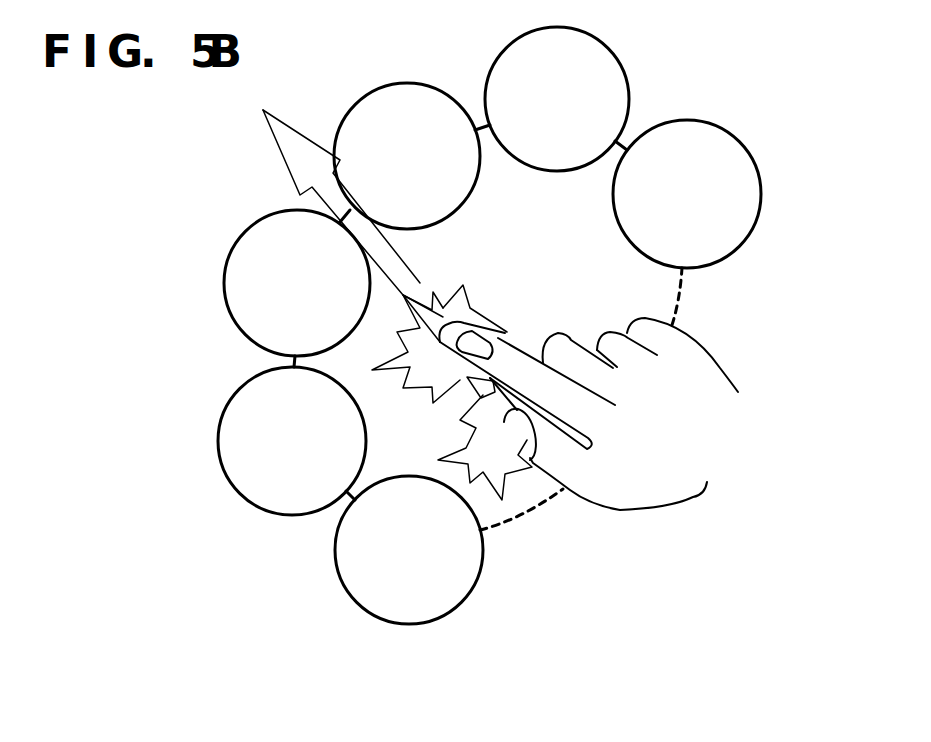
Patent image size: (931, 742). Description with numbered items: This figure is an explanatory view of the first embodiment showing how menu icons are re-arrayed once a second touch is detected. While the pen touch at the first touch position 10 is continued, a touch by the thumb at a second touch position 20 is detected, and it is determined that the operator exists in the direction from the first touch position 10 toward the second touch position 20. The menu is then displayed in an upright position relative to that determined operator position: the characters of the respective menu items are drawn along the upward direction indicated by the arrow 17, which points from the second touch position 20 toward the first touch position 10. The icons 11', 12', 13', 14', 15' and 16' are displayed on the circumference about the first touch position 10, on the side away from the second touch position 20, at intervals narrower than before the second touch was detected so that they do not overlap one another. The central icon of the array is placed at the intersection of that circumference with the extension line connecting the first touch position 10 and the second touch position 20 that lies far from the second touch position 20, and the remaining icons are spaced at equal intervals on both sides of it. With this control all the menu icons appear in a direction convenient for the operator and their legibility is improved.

The first touch position 10 is at (488, 302).
The menu icon 11' is at (407, 133).
The menu icon 12' is at (593, 99).
The menu icon 13' is at (703, 210).
The menu icon 14' is at (396, 567).
The menu icon 15' is at (259, 441).
The menu icon 16' is at (257, 283).
The arrow 17 is at (310, 137).
The second touch position 20 is at (512, 490).